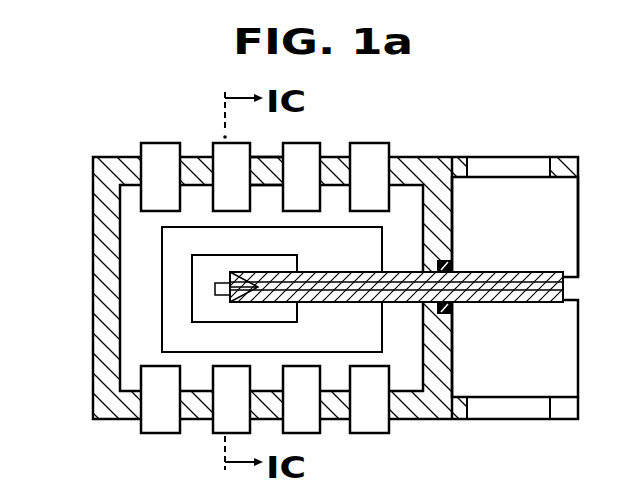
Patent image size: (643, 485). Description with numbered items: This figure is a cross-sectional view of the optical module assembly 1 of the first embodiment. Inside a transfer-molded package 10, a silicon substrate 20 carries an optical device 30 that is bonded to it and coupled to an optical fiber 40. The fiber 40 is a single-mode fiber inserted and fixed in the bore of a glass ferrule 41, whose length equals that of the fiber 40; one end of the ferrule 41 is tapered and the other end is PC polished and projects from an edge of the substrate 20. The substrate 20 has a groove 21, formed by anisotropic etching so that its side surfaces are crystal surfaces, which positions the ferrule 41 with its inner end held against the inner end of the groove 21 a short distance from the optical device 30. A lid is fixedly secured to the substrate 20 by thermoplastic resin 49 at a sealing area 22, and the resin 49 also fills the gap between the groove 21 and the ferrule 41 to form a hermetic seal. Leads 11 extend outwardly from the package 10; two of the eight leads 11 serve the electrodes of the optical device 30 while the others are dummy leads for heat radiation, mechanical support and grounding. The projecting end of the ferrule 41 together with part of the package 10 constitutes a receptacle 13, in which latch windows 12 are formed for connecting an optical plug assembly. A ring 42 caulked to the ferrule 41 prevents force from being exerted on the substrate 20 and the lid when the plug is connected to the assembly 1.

The optical module assembly 1 is at (580, 163).
The package 10 is at (279, 154).
The leads 11 is at (214, 144).
The latch windows 12 is at (500, 166).
The receptacle 13 is at (528, 367).
The substrate 20 is at (334, 188).
The groove 21 is at (243, 272).
The sealing area 22 is at (358, 341).
The optical device 30 is at (215, 288).
The optical fiber 40 is at (542, 286).
The ferrule 41 is at (500, 273).
The ring 42 is at (453, 266).
The thermoplastic resin 49 is at (316, 272).